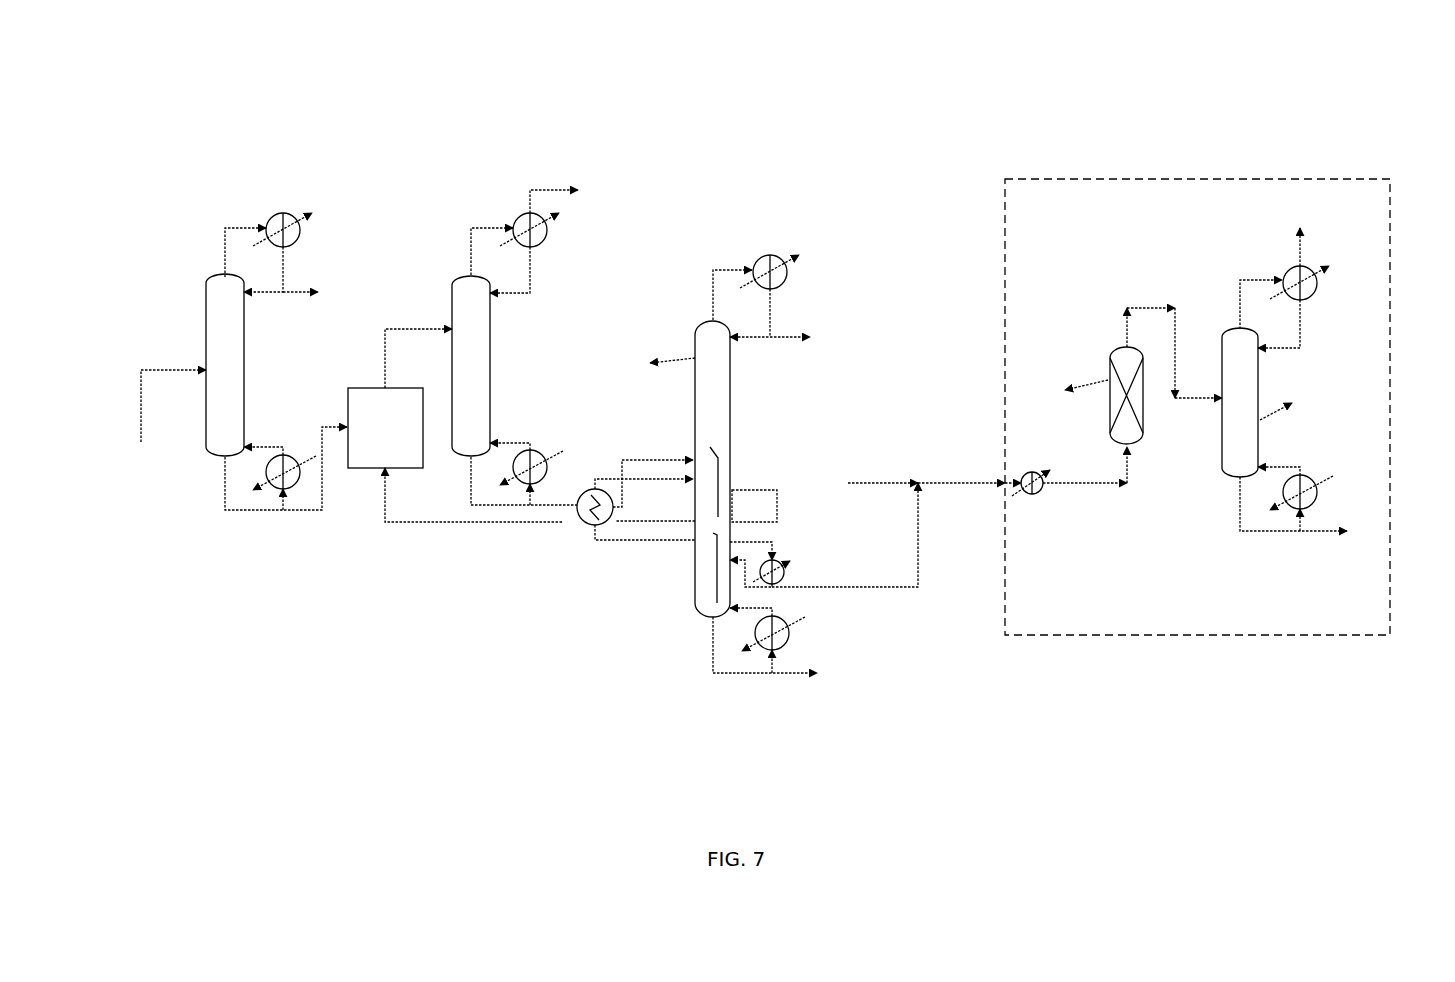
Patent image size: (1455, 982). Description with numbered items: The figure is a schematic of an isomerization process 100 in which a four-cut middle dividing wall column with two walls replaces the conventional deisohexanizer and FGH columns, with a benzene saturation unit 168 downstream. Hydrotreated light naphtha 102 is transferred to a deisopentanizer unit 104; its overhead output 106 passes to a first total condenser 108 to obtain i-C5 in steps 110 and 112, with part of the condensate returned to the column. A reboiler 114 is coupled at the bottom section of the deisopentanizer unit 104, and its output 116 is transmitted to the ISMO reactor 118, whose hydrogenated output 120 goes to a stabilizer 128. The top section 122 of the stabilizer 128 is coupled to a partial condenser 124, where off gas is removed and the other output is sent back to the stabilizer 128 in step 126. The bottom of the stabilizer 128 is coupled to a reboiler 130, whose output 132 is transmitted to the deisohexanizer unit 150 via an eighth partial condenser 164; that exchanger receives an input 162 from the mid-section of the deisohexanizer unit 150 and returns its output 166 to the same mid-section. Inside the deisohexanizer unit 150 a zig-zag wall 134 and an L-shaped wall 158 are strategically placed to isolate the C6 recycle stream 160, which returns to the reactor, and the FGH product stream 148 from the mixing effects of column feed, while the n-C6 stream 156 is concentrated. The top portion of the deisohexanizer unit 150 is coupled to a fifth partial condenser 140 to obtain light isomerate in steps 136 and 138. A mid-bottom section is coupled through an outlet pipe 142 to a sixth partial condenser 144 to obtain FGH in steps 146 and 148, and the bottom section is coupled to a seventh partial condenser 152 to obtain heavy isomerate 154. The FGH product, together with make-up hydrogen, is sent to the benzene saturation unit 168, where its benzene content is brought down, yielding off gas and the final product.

The process 100 is at (1384, 128).
The hydrotreated light naphtha 102 is at (141, 442).
The deisopentanizer unit 104 is at (205, 340).
The output 106 is at (238, 238).
The first total condenser 108 is at (289, 216).
The step 110 is at (266, 269).
The step 112 is at (311, 281).
The reboiler 114 is at (287, 452).
The output 116 is at (286, 486).
The ISMO reactor 118 is at (385, 421).
The hydrogenated stream line 120 is at (418, 343).
The top section 122 is at (492, 232).
The partial condenser 124 is at (559, 216).
The step 126 is at (520, 283).
The stabilizer 128 is at (473, 366).
The reboiler 130 is at (529, 457).
The output 132 is at (524, 481).
The zig-zag wall 134 is at (706, 405).
The step 136 is at (738, 295).
The light isomerate 138 is at (787, 315).
The fifth partial condenser 140 is at (769, 258).
The outlet pipe 142 is at (751, 539).
The sixth partial condenser 144 is at (784, 561).
The step 146 is at (752, 583).
The FGH product stream 148 is at (896, 518).
The deisohexanizer unit 150 is at (652, 370).
The seventh partial condenser 152 is at (784, 624).
The heavy isomerate 154 is at (790, 645).
The n-C6 stream 156 is at (755, 506).
The L shaped wall 158 is at (713, 578).
The C6 recycle stream 160 is at (540, 509).
The input 162 is at (645, 545).
The eighth partial condenser 164 is at (593, 486).
The output 166 is at (644, 462).
The benzene saturation unit 168 is at (1197, 407).